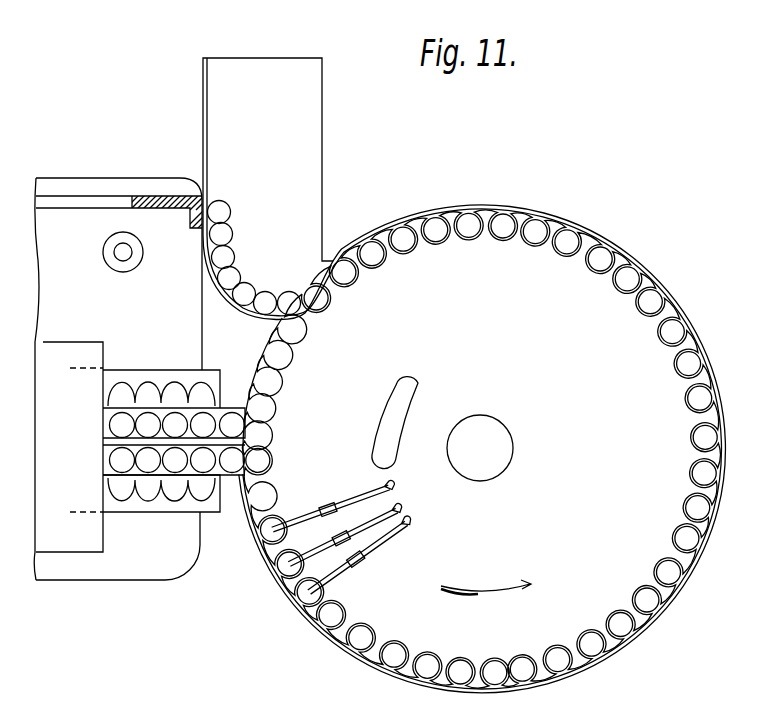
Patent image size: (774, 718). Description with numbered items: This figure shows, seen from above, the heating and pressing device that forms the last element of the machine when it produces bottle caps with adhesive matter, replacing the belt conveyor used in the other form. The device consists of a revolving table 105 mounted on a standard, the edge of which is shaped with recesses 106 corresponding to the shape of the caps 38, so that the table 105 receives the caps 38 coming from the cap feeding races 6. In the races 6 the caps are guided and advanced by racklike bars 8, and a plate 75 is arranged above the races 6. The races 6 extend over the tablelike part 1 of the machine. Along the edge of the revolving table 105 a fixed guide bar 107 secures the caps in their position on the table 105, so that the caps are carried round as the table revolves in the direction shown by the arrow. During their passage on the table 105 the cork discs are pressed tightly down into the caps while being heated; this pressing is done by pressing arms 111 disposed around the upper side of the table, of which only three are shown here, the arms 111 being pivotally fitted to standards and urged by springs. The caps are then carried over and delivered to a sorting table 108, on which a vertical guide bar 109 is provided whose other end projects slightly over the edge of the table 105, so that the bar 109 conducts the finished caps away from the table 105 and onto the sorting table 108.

The table 1 is at (138, 578).
The cap feeding races 6 is at (223, 477).
The racklike bars 8 is at (158, 511).
The caps 38 is at (204, 463).
The plate 75 is at (92, 343).
The table 105 is at (481, 449).
The recesses 106 is at (272, 396).
The fixed guide bar 107 is at (705, 556).
The sorting table 108 is at (312, 155).
The vertical guide bar 109 is at (254, 269).
The pressing arms 111 is at (334, 568).